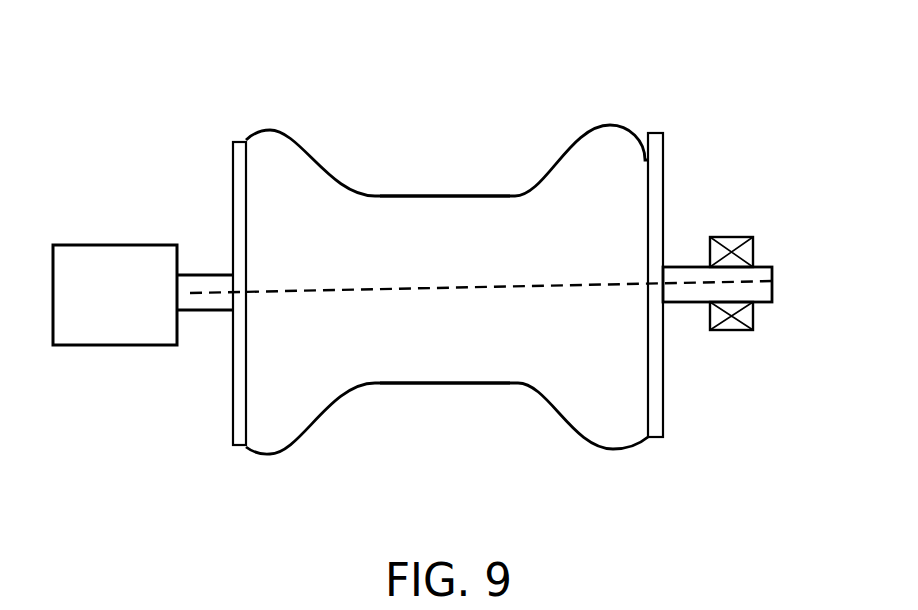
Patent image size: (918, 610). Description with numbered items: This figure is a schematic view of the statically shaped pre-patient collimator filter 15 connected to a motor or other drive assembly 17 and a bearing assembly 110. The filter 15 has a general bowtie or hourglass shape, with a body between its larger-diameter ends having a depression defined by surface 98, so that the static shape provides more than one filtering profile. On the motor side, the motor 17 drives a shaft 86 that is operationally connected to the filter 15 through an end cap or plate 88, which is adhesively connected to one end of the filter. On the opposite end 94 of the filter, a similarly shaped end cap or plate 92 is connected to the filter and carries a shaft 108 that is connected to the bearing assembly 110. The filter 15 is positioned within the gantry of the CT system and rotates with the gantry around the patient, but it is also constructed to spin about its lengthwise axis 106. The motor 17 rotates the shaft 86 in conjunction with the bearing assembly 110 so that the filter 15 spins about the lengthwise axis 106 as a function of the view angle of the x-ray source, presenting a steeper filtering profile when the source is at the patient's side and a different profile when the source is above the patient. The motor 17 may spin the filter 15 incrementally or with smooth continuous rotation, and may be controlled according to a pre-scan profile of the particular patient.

The pre-patient collimator filter 15 is at (168, 106).
The motor 17 is at (118, 245).
The shaft 86 is at (192, 292).
The end cap 88 is at (238, 150).
The end cap 92 is at (658, 216).
The opposite end 94 is at (609, 138).
The surface 98 is at (443, 196).
The lengthwise axis 106 is at (455, 289).
The shaft 108 is at (758, 283).
The bearing assembly 110 is at (775, 216).